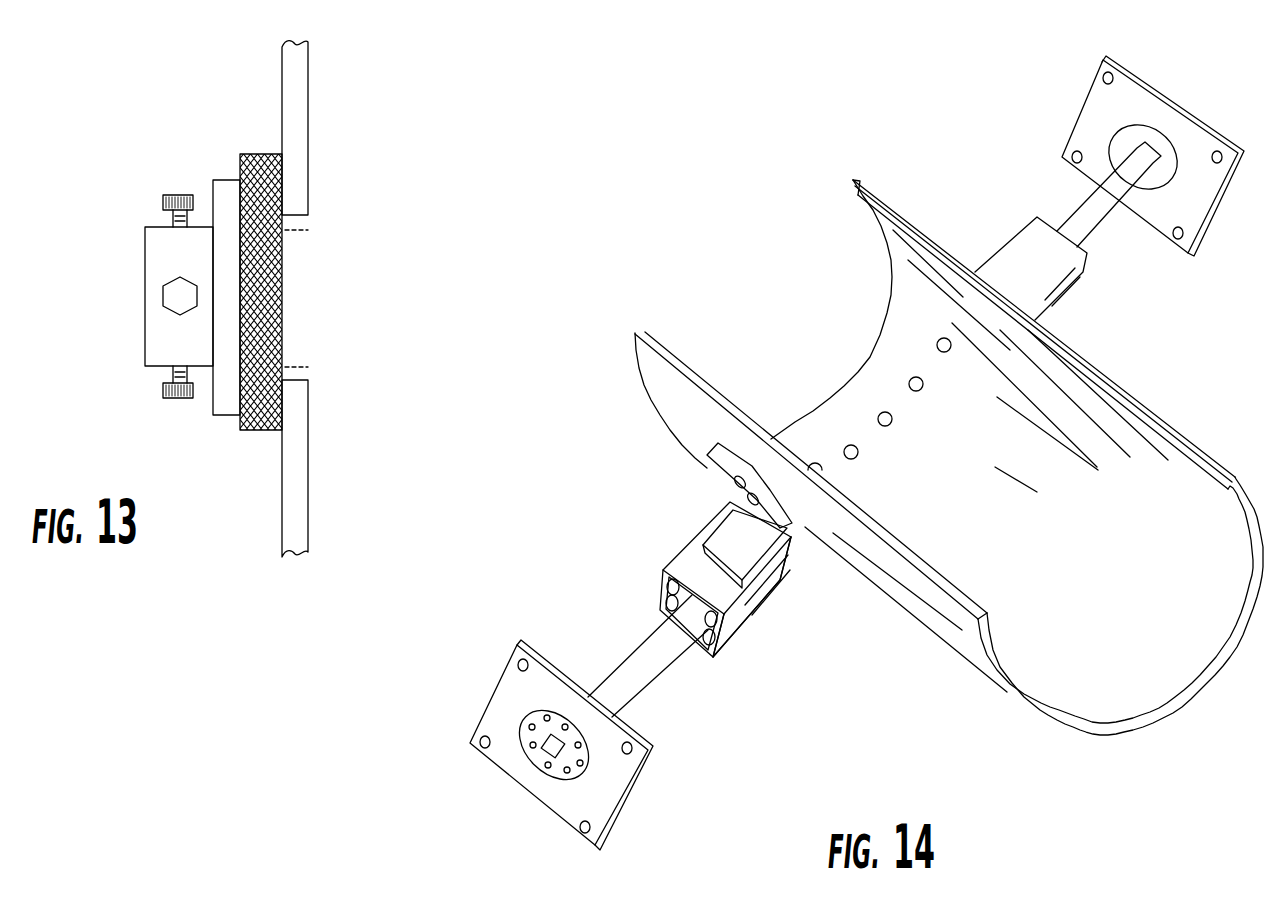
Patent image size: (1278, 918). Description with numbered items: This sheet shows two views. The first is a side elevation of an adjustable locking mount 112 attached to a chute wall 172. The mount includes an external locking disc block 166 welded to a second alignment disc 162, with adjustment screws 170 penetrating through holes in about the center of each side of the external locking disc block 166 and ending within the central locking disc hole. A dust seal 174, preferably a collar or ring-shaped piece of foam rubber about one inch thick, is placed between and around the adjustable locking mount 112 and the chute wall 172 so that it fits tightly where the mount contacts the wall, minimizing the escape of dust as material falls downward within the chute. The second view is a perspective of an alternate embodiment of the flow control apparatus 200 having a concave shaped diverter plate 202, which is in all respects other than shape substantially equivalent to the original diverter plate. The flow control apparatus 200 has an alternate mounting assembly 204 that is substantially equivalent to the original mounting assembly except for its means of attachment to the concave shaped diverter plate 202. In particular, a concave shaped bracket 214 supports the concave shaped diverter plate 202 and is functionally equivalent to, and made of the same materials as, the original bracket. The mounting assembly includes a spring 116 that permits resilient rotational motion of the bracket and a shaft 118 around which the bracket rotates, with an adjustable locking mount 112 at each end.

In FIG. 13, the adjustable locking mount 112 is at (147, 294).
In FIG. 14, the adjustable locking mount 112 is at (628, 808).
In FIG. 14, the spring 116 is at (686, 538).
In FIG. 14, the shaft 118 is at (604, 673).
In FIG. 13, the second alignment disc 162 is at (216, 180).
In FIG. 13, the external locking disc block 166 is at (145, 278).
In FIG. 13, the adjustment screws 170 is at (177, 197).
In FIG. 13, the chute wall 172 is at (282, 78).
In FIG. 13, the dust seal 174 is at (262, 432).
In FIG. 14, the flow control apparatus 200 is at (1152, 391).
In FIG. 14, the concave shaped diverter plate 202 is at (910, 616).
In FIG. 14, the alternate mounting assembly 204 is at (770, 608).
In FIG. 14, the concave shaped bracket 214 is at (720, 467).